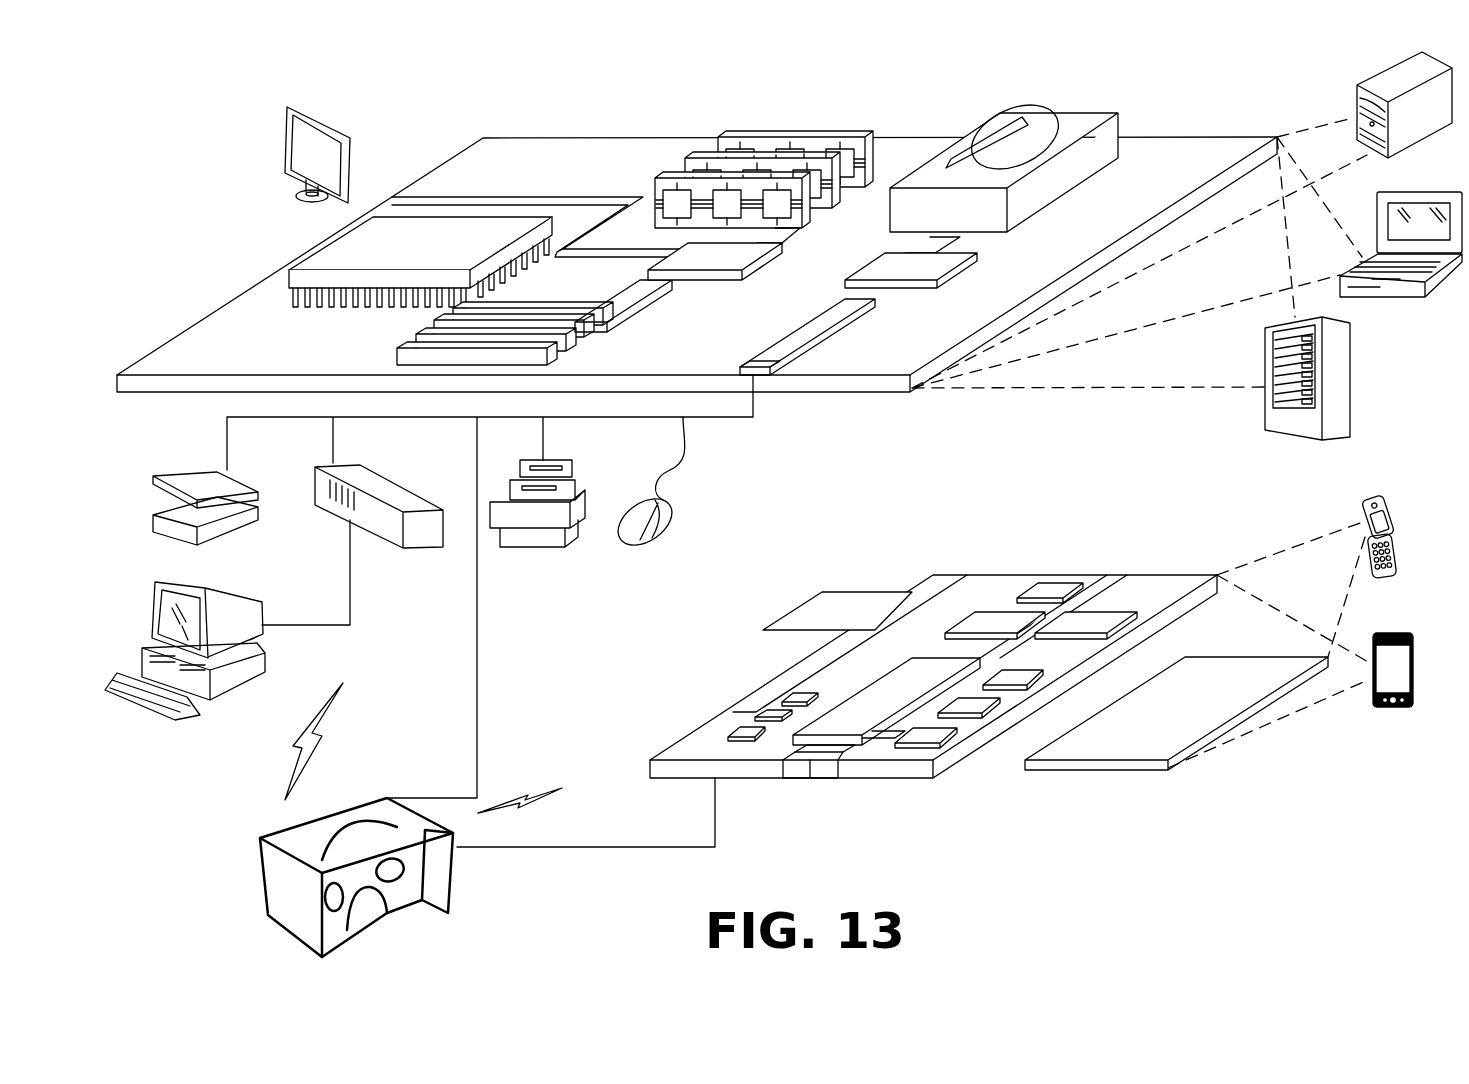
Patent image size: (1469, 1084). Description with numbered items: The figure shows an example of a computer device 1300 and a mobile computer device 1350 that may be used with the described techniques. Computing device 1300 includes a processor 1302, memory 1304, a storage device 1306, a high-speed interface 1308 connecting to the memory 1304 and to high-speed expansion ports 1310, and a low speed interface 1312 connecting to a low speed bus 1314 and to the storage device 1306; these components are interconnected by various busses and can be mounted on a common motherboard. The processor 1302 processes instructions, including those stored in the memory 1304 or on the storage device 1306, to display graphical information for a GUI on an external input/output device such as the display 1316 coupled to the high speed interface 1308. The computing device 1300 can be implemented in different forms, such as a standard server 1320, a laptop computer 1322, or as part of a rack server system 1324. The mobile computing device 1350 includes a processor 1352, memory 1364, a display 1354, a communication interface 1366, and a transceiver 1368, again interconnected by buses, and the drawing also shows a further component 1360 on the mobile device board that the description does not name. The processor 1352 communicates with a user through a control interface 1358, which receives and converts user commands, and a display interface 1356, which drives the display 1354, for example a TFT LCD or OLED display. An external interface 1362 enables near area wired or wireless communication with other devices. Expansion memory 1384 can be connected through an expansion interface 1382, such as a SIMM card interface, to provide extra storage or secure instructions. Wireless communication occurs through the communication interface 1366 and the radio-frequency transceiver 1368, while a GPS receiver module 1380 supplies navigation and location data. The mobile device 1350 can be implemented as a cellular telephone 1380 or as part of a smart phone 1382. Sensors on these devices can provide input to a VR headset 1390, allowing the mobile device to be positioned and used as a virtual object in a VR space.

The computing device 1300 is at (430, 85).
The processor 1302 is at (314, 256).
The memory 1304 is at (800, 150).
The storage device 1306 is at (1052, 113).
The high-speed interface 1308 is at (727, 252).
The high-speed expansion ports 1310 is at (422, 338).
The low speed interface 1312 is at (882, 262).
The low speed bus 1314 is at (760, 366).
The display 1316 is at (296, 106).
The standard server 1320 is at (1380, 82).
The laptop computer 1322 is at (1438, 192).
The rack server system 1324 is at (1353, 380).
The mobile computer device 1350 is at (1258, 767).
The processor 1352 is at (853, 710).
The display 1354 is at (1220, 672).
The display interface 1356 is at (938, 732).
The control interface 1358 is at (978, 702).
The GPS module 1360 is at (1020, 675).
The external interface 1362 is at (810, 765).
The memory 1364 is at (762, 713).
The communication interface 1366 is at (997, 612).
The transceiver 1368 is at (1098, 612).
The GPS receiver module / cellular telephone 1380 is at (1052, 583).
The expansion interface / smart phone 1382 is at (912, 592).
The expansion memory 1384 is at (823, 592).
The VR headset 1390 is at (470, 855).